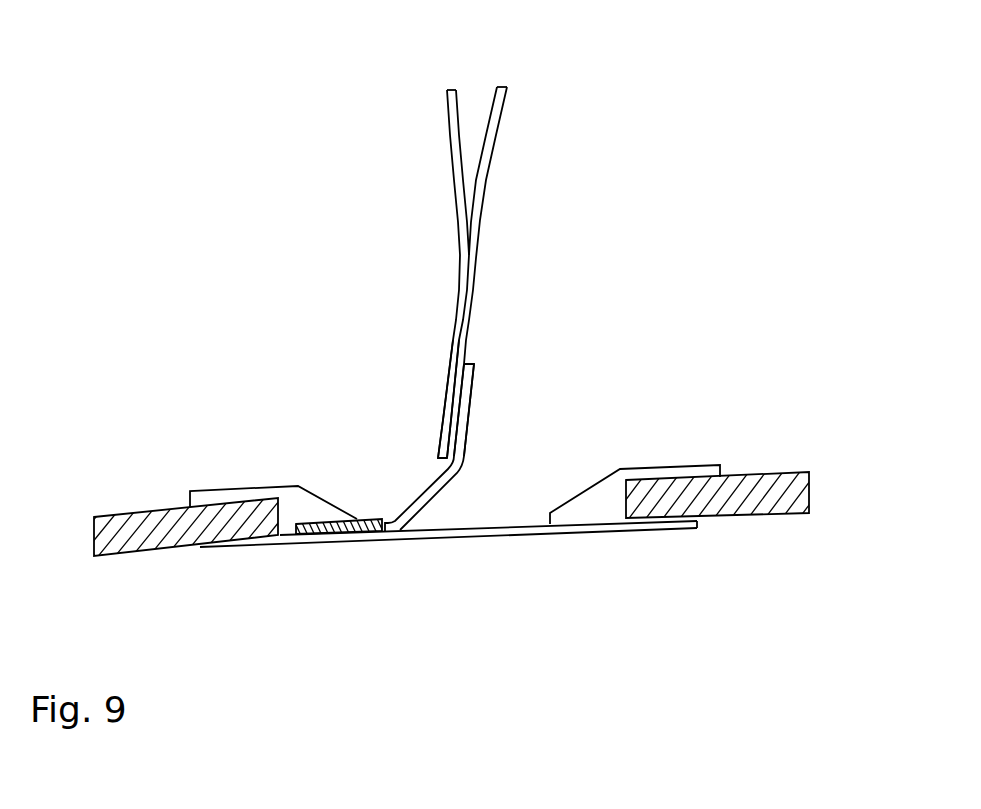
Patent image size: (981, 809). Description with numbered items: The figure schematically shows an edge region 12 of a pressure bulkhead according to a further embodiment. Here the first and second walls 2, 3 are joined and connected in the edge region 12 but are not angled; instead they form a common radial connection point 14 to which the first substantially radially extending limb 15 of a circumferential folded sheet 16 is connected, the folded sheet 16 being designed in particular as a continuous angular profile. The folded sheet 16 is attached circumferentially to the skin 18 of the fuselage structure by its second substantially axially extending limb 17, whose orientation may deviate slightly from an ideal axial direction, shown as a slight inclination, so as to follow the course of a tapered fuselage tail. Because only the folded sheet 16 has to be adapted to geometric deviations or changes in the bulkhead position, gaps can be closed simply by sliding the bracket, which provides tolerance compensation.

The first wall 2 is at (449, 117).
The second wall 3 is at (493, 98).
The edge region 12 is at (600, 227).
The common radial connection point 14 is at (440, 410).
The first substantially radially extending limb 15 is at (470, 408).
The circumferential folded sheet 16 is at (435, 498).
The second substantially axially extending limb 17 is at (316, 532).
The skin 18 is at (441, 528).